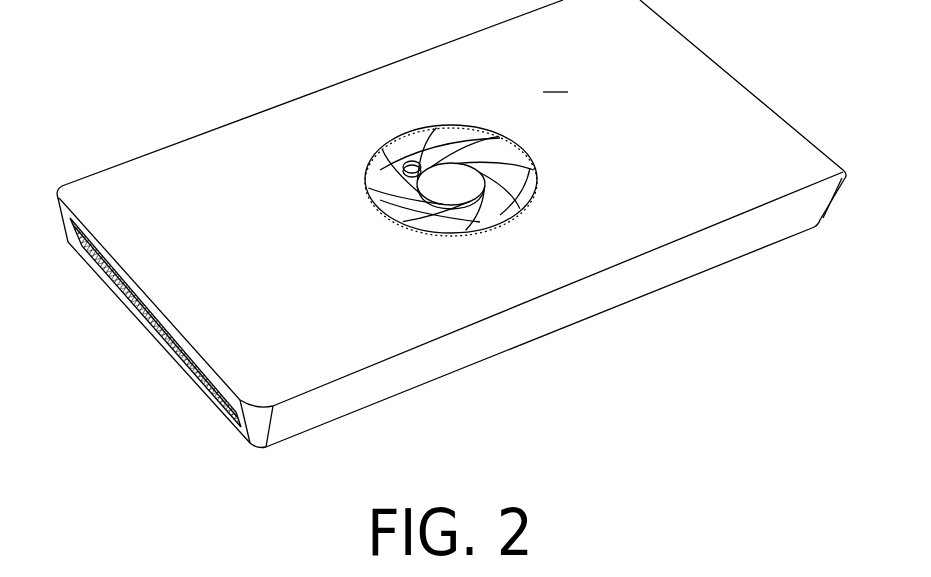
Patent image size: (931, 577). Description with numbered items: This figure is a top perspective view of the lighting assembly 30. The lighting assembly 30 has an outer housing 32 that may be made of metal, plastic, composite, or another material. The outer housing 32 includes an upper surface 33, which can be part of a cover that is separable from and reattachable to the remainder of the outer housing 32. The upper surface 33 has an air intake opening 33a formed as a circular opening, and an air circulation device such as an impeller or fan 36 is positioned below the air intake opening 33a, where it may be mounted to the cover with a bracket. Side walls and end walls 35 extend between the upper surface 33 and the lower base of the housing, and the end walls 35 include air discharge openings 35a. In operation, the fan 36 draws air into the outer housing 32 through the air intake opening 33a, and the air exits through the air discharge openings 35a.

The lighting assembly 30 is at (434, 245).
The outer housing 32 is at (707, 55).
The upper surface 33 is at (450, 203).
The air intake opening 33a is at (438, 180).
The end walls 35 is at (162, 344).
The air discharge openings 35a is at (147, 322).
The fan 36 is at (462, 178).